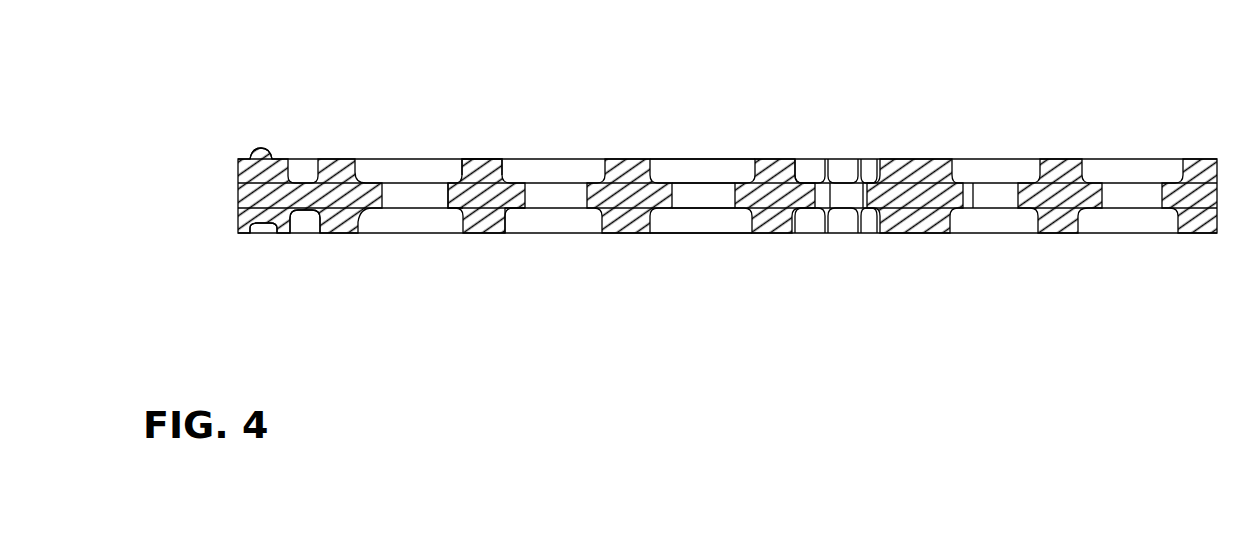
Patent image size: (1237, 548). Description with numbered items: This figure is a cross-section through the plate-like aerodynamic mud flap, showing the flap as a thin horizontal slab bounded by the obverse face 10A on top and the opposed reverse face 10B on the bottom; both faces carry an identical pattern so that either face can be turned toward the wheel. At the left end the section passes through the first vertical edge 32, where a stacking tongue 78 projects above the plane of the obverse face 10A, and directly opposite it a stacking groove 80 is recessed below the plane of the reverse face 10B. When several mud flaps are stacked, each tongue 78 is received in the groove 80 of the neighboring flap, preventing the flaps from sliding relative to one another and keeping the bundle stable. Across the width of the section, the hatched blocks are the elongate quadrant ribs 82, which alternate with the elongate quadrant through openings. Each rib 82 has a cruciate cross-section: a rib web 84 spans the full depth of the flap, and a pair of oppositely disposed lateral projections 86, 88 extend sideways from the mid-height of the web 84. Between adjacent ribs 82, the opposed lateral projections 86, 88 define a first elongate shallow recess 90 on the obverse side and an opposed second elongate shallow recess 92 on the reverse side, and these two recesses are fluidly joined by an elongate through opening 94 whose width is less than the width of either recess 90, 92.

The obverse face 10A is at (975, 152).
The reverse face 10B is at (807, 243).
The first vertical edge 32 is at (257, 192).
The stacking tongue 78 is at (265, 150).
The stacking groove 80 is at (262, 233).
The elongate quadrant rib 82 is at (483, 216).
The rib web 84 is at (478, 165).
The lateral projection 86 is at (452, 207).
The lateral projection 88 is at (527, 215).
The first elongate shallow recess 90 is at (667, 172).
The second elongate shallow recess 92 is at (707, 218).
The elongate through opening 94 is at (698, 197).